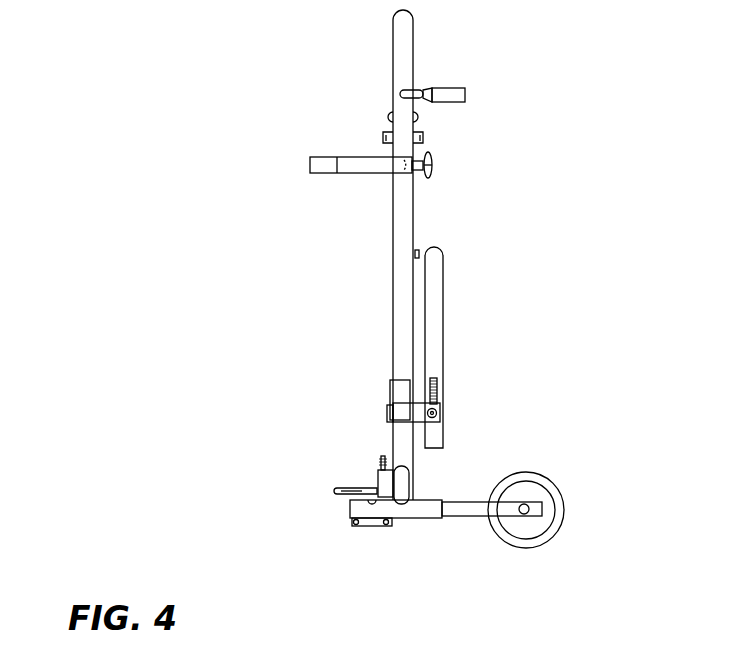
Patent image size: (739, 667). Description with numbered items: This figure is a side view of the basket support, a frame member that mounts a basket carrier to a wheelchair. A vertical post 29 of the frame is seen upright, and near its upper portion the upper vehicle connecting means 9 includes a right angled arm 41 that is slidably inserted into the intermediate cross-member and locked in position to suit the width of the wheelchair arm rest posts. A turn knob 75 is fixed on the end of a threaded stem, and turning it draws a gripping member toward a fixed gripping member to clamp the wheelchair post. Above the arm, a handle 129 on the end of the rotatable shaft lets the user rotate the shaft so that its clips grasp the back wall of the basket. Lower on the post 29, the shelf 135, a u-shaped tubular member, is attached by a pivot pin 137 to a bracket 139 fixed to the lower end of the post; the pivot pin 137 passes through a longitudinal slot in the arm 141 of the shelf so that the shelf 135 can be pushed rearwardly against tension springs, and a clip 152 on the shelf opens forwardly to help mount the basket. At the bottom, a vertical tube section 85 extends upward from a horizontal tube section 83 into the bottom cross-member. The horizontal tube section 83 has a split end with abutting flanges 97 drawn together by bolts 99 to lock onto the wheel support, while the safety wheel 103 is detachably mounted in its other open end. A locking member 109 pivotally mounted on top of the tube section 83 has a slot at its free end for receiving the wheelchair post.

The upper vehicle connecting means 9 is at (395, 255).
The vertical post 29 is at (405, 218).
The right angled arm 41 is at (325, 150).
The turn knob 75 is at (432, 165).
The handle 129 is at (462, 92).
The clip 152 is at (417, 258).
The arm 141 is at (440, 308).
The shelf 135 is at (475, 347).
The pivot pin 137 is at (438, 411).
The bracket 139 is at (442, 426).
The vertical tube section 85 is at (455, 470).
The locking member 109 is at (328, 485).
The horizontal tube section 83 is at (435, 512).
The abutting flange 97 is at (375, 527).
The bolt 99 is at (353, 527).
The safety wheel 103 is at (548, 537).